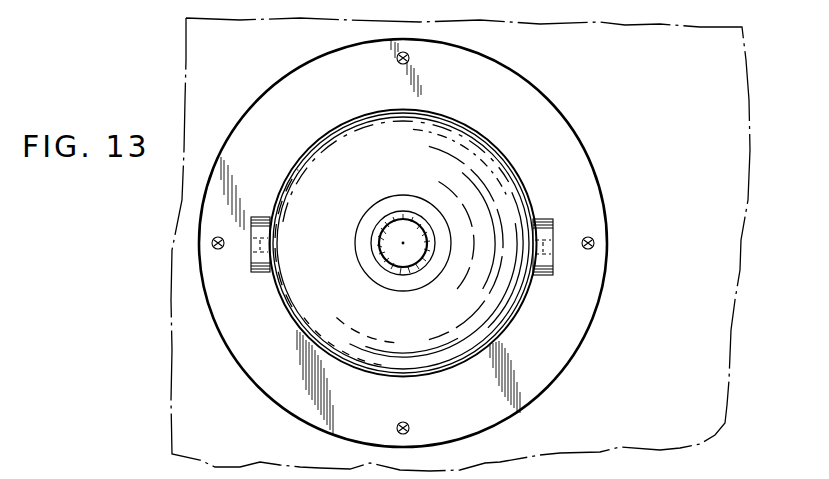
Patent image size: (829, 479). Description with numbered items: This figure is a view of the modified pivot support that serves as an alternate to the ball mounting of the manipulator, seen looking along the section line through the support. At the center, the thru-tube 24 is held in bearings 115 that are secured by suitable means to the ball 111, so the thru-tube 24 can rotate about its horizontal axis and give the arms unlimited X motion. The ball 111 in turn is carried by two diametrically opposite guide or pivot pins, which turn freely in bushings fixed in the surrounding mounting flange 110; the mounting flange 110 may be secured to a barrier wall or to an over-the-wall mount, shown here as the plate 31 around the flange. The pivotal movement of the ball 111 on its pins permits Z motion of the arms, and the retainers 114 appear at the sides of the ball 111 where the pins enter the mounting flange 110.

The mounting plate 31 is at (622, 25).
The mounting flange 110 is at (547, 106).
The ball 111 is at (500, 175).
The mounting bracket 114 is at (253, 247).
The bearings 115 is at (372, 221).
The thru-tube 24 is at (374, 239).